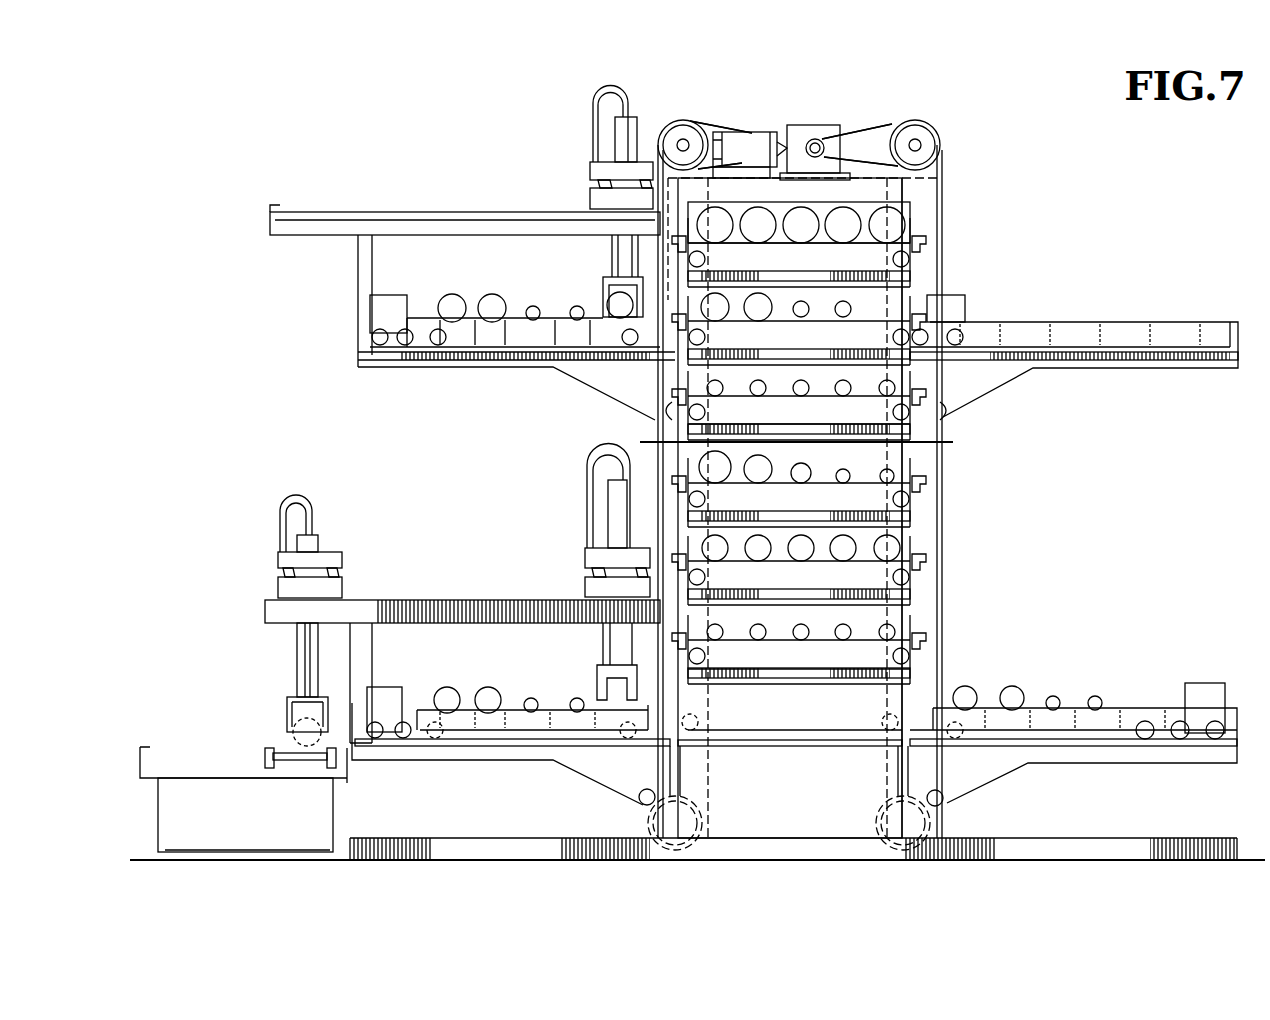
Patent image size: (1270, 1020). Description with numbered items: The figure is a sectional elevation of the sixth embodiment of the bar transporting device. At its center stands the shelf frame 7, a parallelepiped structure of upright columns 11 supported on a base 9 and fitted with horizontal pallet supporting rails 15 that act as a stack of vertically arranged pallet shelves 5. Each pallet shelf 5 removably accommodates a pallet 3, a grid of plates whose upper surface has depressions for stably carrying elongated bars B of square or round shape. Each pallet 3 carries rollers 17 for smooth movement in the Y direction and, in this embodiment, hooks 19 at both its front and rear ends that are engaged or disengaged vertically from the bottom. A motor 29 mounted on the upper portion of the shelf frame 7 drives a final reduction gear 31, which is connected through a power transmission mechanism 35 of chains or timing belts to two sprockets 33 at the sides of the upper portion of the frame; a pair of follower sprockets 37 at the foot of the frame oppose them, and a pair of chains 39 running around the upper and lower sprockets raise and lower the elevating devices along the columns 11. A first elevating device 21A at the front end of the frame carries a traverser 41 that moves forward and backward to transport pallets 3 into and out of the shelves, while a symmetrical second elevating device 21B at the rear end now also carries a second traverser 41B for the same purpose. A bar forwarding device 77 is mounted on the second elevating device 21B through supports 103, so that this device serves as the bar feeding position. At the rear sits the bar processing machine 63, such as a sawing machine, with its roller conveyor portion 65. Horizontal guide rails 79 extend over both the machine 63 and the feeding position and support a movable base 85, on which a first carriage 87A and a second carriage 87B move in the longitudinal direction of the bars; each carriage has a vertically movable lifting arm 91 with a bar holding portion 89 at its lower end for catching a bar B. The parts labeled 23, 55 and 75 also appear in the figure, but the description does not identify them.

The pallet 3 is at (920, 268).
The pallet shelf 5 is at (920, 436).
The shelf frame 7 is at (932, 560).
The base 9 is at (875, 860).
The upright column 11 is at (692, 778).
The horizontal pallet supporting rail 15 is at (805, 445).
The roller 17 is at (725, 445).
The hook 19 is at (925, 248).
The first elevating device 21A is at (1010, 390).
The second elevating device 21B is at (440, 375).
The sprocket 23 is at (700, 722).
The motor 29 is at (750, 132).
The final reduction gear 31 is at (798, 125).
The sprocket 33 is at (672, 122).
The power transmission mechanism 35 is at (712, 128).
The follower sprocket 37 is at (690, 823).
The chain 39 is at (944, 168).
The traverser 41 is at (970, 298).
The second traverser 41B is at (405, 298).
The support bar 55 is at (803, 735).
The bar processing machine 63 is at (222, 822).
The roller conveyor portion 65 is at (280, 752).
The base bar 75 is at (790, 746).
The bar forwarding device 77 is at (560, 192).
The horizontal guide rail 79 is at (440, 600).
The movable base 85 is at (278, 588).
The first carriage 87A is at (364, 529).
The second carriage 87B is at (332, 550).
The bar holding portion 89 is at (287, 712).
The lifting arm 91 is at (297, 655).
The support 103 is at (368, 675).
The elongated bar B is at (925, 225).